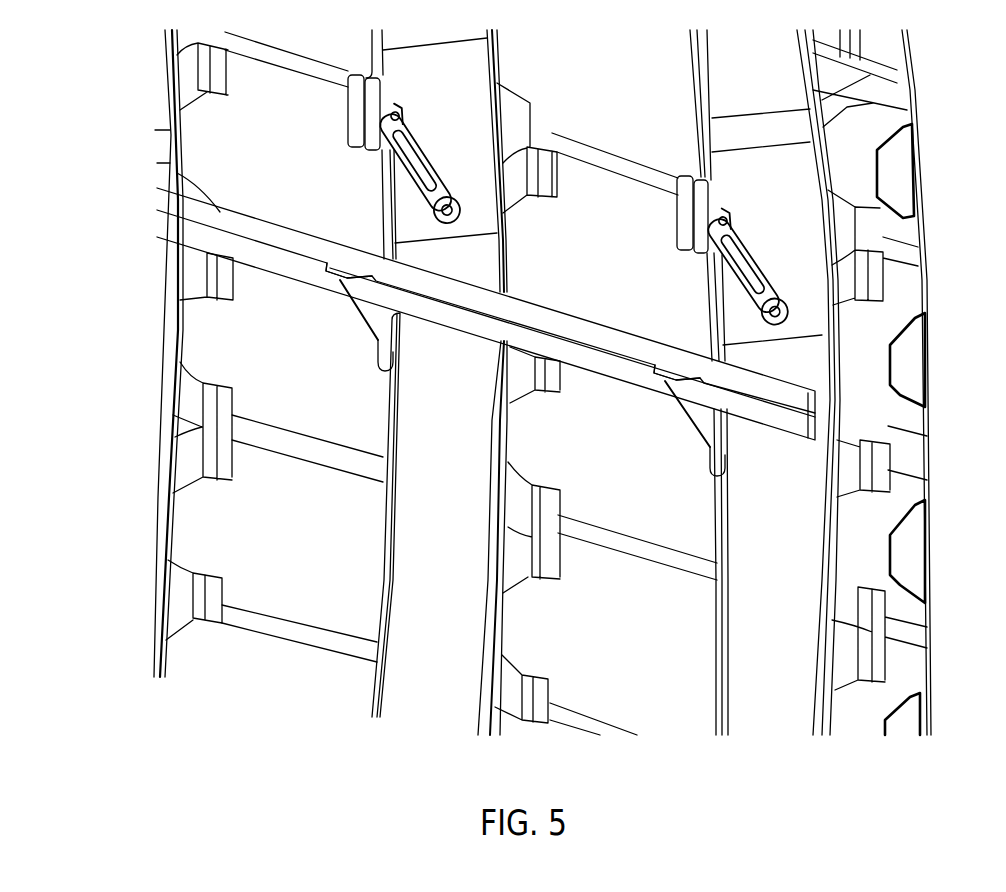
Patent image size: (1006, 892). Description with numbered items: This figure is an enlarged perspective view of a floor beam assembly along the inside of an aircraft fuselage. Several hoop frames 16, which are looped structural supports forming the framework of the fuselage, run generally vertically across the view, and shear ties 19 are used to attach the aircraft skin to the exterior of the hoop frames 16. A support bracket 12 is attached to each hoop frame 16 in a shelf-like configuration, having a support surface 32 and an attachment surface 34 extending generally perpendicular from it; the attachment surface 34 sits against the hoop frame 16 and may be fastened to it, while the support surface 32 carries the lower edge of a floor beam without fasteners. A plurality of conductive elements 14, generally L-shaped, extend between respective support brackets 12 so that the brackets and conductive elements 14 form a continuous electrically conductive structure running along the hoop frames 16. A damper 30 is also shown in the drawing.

The support bracket 12 is at (352, 314).
The conductive element 14 is at (217, 213).
The hoop frame 16 is at (758, 603).
The shear tie 19 is at (833, 263).
The damper 30 is at (750, 249).
The support surface 32 is at (350, 272).
The attachment surface 34 is at (383, 352).